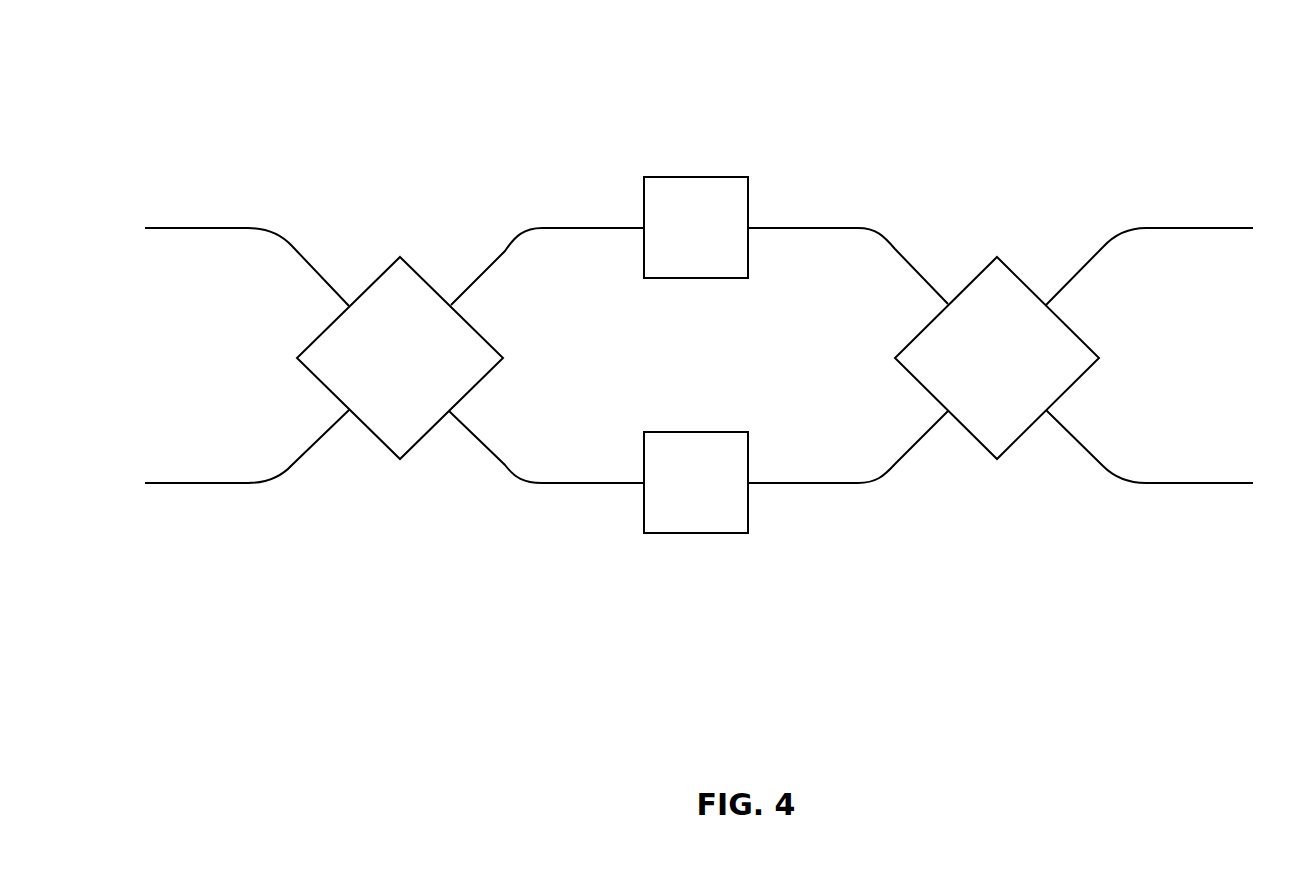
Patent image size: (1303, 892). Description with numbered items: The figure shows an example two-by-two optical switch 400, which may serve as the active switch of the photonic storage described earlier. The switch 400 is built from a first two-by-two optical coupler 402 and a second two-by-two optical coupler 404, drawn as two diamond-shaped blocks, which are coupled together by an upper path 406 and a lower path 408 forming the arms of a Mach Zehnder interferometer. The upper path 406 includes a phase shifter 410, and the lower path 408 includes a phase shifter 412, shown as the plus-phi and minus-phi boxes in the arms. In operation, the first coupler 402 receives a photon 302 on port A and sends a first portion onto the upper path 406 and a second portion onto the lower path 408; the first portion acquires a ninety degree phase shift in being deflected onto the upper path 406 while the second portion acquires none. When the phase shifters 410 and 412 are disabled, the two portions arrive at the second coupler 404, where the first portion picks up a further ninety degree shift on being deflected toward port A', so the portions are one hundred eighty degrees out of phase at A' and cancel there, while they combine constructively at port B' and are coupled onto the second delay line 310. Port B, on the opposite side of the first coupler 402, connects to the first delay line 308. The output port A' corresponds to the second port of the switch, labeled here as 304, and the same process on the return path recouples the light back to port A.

The 2×2 optical switch 400 is at (1256, 68).
The photon 302 is at (188, 229).
The first delay line 308 is at (185, 482).
The first 2×2 optical coupler 402 is at (376, 277).
The second 2×2 optical coupler 404 is at (1012, 272).
The upper path 406 is at (520, 250).
The lower path 408 is at (496, 447).
The phase shifter 410 is at (695, 279).
The phase shifter 412 is at (690, 431).
The first output waveguide (A') 304 is at (1197, 229).
The second delay line 310 is at (1195, 482).